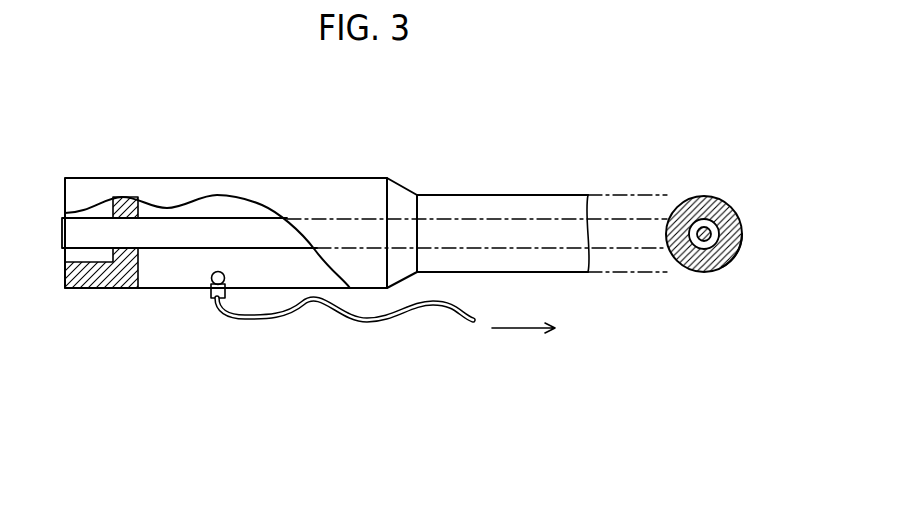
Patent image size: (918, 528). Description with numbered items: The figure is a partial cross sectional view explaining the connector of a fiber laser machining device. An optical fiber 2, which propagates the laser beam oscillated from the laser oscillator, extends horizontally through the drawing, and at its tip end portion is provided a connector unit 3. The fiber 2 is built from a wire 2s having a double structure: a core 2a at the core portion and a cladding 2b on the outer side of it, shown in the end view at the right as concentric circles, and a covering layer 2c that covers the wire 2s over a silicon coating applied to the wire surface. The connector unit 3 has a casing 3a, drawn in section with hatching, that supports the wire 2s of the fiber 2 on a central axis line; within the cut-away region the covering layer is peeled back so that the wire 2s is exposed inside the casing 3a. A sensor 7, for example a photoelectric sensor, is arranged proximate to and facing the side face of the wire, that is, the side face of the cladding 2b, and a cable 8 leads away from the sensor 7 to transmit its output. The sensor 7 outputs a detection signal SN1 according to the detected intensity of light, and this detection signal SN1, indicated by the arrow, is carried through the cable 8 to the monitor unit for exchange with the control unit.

The optical fiber 2 is at (498, 195).
The core 2a is at (690, 197).
The cladding 2b is at (714, 196).
The covering layer 2c is at (715, 273).
The wire 2s is at (178, 218).
The connector unit 3 is at (328, 178).
The casing 3a is at (132, 288).
The sensor 7 is at (208, 302).
The cable 8 is at (420, 311).
The detection signal SN1 is at (523, 342).